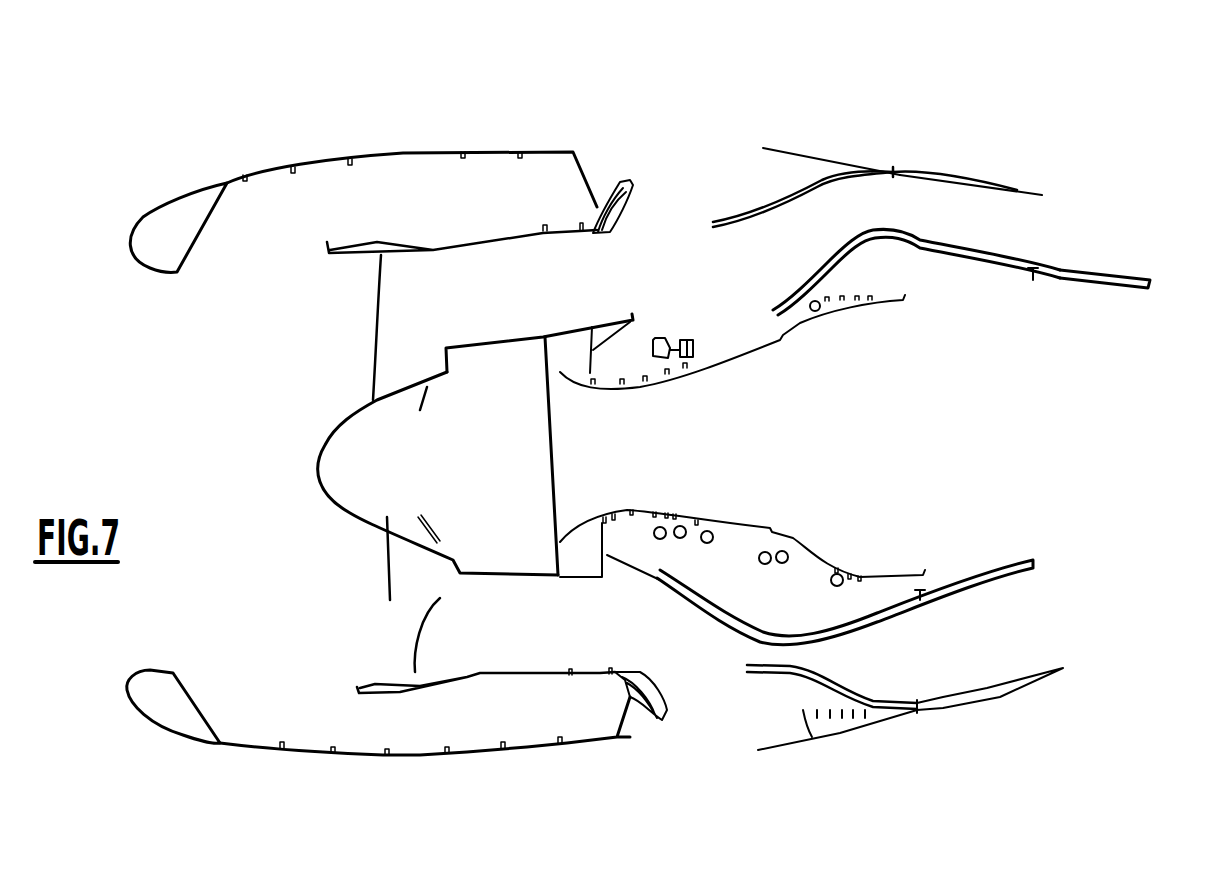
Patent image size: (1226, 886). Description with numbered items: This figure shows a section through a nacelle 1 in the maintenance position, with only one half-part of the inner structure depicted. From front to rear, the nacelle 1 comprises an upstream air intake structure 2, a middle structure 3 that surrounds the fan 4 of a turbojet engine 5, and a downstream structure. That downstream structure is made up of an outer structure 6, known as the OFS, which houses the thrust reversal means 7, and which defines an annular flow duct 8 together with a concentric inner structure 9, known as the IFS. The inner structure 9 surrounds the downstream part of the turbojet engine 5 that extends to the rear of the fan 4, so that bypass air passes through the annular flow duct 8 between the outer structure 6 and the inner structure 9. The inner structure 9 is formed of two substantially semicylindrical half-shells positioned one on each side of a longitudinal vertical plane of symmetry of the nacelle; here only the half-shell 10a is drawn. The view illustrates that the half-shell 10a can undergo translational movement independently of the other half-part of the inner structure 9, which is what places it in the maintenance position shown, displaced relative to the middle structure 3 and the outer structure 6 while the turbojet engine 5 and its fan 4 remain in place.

The nacelle 1 is at (883, 124).
The upstream air intake structure 2 is at (166, 197).
The middle structure 3 is at (405, 150).
The fan 4 is at (521, 520).
The turbojet engine 5 is at (715, 485).
The outer structure 6 is at (881, 160).
The thrust reversal means 7 is at (780, 180).
The annular flow duct 8 is at (947, 208).
The inner structure 9 is at (1025, 249).
The half-shell 10a is at (1095, 265).